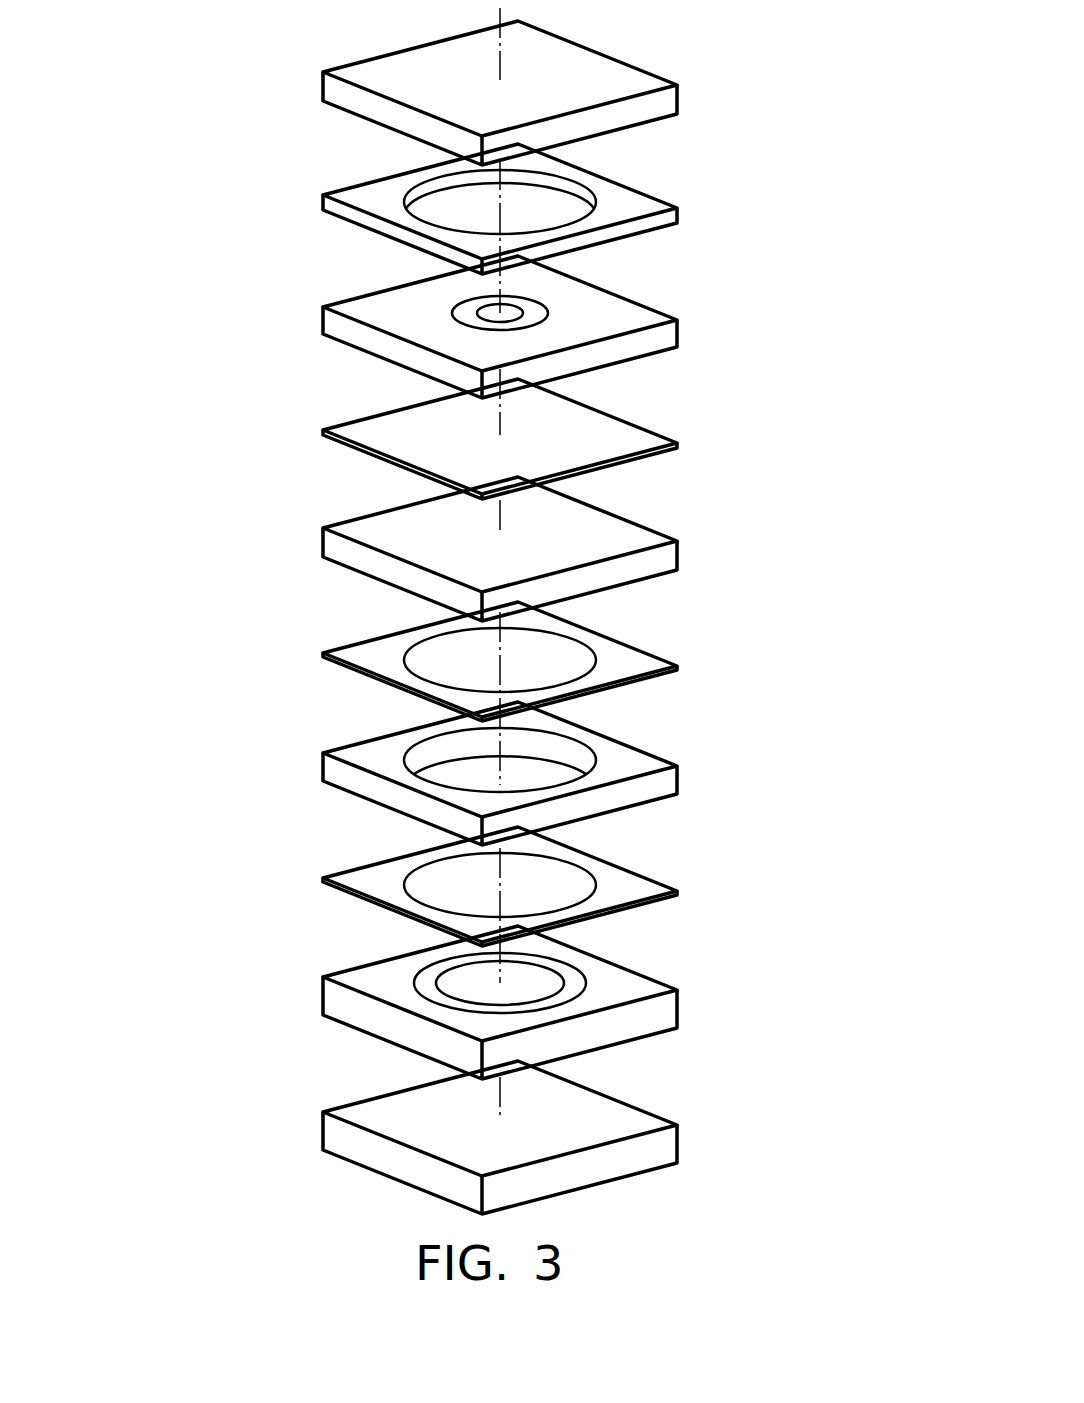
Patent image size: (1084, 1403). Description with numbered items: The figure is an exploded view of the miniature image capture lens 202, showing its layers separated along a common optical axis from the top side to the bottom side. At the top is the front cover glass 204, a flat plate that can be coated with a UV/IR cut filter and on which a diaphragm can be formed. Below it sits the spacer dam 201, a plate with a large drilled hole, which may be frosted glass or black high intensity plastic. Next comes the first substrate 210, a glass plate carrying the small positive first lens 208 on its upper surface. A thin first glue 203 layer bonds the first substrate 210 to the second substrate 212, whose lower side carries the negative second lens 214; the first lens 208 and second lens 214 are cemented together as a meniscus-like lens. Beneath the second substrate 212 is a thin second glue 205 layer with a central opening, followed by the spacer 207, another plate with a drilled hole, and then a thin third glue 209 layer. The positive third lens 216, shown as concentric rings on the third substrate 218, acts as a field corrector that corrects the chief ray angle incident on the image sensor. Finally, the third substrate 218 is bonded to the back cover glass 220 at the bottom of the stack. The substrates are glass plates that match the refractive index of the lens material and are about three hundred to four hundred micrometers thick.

The miniature image capture lens 202 is at (192, 56).
The front cover glass 204 is at (633, 82).
The spacer dam 201 is at (633, 205).
The first lens 208 is at (537, 311).
The first substrate 210 is at (545, 325).
The first glue 203 is at (633, 437).
The second lens 214 is at (637, 567).
The second substrate 212 is at (545, 549).
The second glue 205 is at (633, 663).
The spacer 207 is at (633, 763).
The third glue 209 is at (633, 887).
The third lens 216 is at (573, 978).
The third substrate 218 is at (545, 1001).
The back cover glass 220 is at (633, 1118).